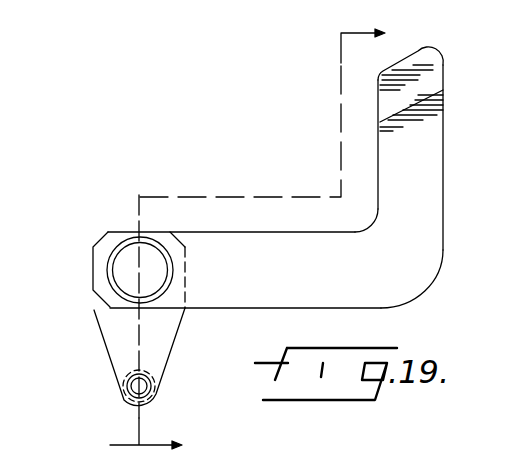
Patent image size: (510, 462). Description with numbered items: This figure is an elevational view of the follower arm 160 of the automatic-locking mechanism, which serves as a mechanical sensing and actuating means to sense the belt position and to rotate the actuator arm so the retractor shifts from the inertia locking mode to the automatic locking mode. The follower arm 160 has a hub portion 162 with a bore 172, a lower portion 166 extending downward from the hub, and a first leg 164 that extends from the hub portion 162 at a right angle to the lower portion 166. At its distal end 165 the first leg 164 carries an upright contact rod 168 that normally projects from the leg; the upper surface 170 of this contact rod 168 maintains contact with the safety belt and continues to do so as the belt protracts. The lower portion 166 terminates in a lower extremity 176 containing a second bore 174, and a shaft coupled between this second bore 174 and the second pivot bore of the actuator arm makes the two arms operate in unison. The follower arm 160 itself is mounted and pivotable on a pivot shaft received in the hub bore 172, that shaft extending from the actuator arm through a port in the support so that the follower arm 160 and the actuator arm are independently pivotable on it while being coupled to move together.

The follower arm 160 is at (287, 162).
The hub portion 162 is at (106, 245).
The first leg 164 is at (291, 294).
The distal end 165 is at (392, 307).
The lower portion 166 is at (110, 342).
The contact rod 168 is at (437, 183).
The upper surface 170 is at (405, 54).
The bore 172 is at (112, 280).
The second bore 174 is at (149, 383).
The lower extremity 176 is at (143, 407).